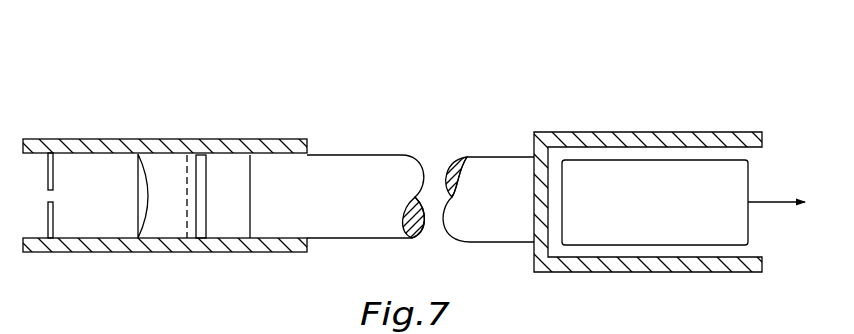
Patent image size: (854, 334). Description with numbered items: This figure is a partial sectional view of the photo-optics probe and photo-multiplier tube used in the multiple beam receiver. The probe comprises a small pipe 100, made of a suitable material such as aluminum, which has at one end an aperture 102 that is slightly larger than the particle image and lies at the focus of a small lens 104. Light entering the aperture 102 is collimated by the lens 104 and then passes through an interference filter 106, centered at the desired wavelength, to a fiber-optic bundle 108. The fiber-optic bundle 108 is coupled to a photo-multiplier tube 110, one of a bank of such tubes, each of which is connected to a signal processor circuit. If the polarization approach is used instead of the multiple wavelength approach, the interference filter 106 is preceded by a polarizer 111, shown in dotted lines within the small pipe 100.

The small pipe 100 is at (98, 108).
The aperture 102 is at (53, 240).
The small lens 104 is at (138, 240).
The interference filter 106 is at (202, 153).
The fiber-optic bundle 108 is at (490, 155).
The photo-multiplier tube 110 is at (648, 245).
The polarizer 111 is at (187, 190).